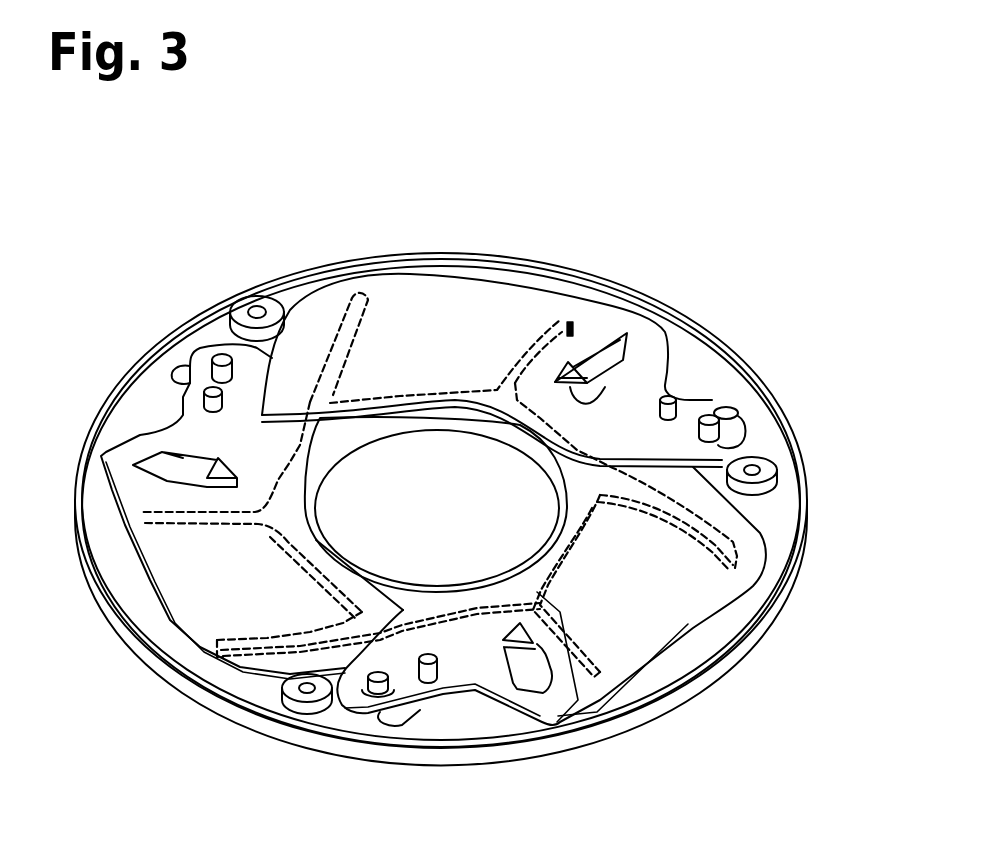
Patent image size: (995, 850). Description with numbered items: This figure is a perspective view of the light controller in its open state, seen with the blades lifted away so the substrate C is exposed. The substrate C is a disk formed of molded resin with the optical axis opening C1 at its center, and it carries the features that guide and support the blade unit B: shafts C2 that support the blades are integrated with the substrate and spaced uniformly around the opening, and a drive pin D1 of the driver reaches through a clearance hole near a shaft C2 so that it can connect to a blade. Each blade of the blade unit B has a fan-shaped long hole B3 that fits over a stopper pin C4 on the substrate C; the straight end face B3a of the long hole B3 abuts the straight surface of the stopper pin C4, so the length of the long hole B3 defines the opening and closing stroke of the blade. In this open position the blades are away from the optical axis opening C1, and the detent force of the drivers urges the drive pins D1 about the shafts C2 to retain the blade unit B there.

The substrate C is at (270, 276).
The blade unit B is at (413, 338).
The optical axis opening C1 is at (505, 440).
The shaft C2 is at (680, 401).
The stopper pin C4 is at (570, 322).
The long hole B3 is at (630, 333).
The end face of long hole B3a is at (568, 378).
The drive pin D1 is at (742, 414).